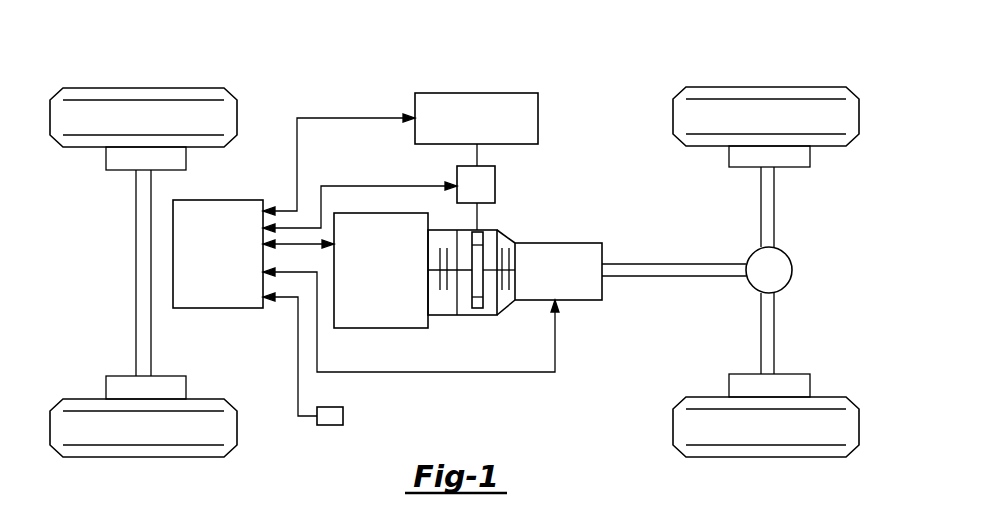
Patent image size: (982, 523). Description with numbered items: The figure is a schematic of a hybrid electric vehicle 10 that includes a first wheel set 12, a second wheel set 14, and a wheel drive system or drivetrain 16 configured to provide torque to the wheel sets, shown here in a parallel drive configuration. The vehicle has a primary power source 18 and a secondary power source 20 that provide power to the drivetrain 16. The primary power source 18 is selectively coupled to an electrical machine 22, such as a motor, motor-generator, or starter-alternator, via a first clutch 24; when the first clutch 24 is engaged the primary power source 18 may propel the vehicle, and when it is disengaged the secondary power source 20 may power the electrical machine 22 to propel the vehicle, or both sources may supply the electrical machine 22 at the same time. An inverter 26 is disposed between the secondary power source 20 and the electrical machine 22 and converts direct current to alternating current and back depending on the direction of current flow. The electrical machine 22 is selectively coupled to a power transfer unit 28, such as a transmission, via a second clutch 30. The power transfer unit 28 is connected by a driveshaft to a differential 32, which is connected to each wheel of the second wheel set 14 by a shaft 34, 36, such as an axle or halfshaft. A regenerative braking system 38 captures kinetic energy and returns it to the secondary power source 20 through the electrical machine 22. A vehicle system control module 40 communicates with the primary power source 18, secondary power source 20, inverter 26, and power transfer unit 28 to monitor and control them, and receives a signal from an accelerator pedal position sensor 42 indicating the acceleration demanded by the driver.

The hybrid electric vehicle 10 is at (292, 66).
The first wheel set 12 is at (130, 65).
The second wheel set 14 is at (736, 58).
The drivetrain 16 is at (417, 68).
The primary power source 18 is at (370, 284).
The secondary power source 20 is at (468, 130).
The electrical machine 22 is at (476, 309).
The first clutch 24 is at (443, 315).
The inverter 26 is at (468, 197).
The power transfer unit 28 is at (548, 284).
The second clutch 30 is at (506, 237).
The differential 32 is at (761, 283).
The shaft 34 is at (761, 211).
The shaft 36 is at (761, 311).
The regenerative braking system 38 is at (106, 158).
The vehicle system control module 40 is at (210, 268).
The accelerator pedal position sensor 42 is at (343, 416).